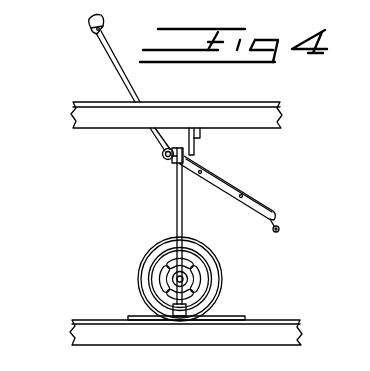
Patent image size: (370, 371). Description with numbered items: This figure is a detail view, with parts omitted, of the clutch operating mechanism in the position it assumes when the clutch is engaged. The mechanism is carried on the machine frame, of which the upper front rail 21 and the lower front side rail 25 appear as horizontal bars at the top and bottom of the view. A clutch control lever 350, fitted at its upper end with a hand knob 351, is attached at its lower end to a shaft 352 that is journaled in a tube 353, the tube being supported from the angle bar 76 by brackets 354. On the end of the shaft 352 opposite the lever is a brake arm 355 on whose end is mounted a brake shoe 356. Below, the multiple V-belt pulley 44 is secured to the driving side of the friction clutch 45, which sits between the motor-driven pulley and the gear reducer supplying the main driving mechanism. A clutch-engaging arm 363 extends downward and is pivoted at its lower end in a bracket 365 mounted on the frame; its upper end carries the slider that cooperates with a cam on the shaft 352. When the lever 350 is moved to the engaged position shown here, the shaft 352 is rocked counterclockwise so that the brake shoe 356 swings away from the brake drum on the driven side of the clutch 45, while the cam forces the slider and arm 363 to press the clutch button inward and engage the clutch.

The front rail 21 is at (283, 120).
The lower front side rail 25 is at (300, 338).
The multiple V-belt pulley 44 is at (205, 272).
The friction clutch 45 is at (207, 250).
The angle bar 76 is at (210, 131).
The clutch control lever 350 is at (116, 66).
The hand knob 351 is at (88, 22).
The shaft 352 is at (163, 152).
The tube 353 is at (163, 156).
The brackets 354 is at (166, 163).
The brake arm 355 is at (240, 190).
The brake shoe 356 is at (279, 229).
The clutch-engaging arm 363 is at (176, 212).
The bracket 365 is at (173, 318).